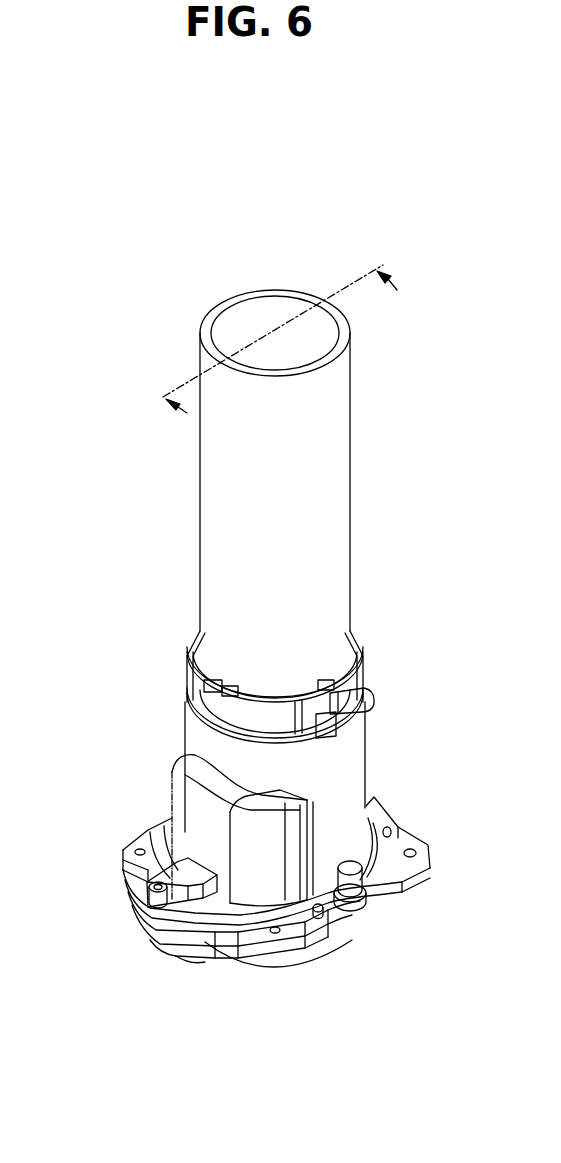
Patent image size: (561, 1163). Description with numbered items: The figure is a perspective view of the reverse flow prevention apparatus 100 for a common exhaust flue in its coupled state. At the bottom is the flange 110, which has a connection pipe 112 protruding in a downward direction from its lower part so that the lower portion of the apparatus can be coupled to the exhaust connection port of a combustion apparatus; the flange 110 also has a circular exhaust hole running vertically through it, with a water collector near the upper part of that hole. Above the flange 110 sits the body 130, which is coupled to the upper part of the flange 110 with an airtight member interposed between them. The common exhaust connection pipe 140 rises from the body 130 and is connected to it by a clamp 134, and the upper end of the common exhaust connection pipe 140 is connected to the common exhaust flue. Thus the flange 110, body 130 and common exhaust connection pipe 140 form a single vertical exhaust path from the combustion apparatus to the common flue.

The reverse flow prevention apparatus 100 is at (120, 274).
The flange 110 is at (133, 935).
The connection pipe 112 is at (243, 955).
The body 130 is at (200, 735).
The clamp 134 is at (190, 682).
The common exhaust connection pipe 140 is at (205, 476).